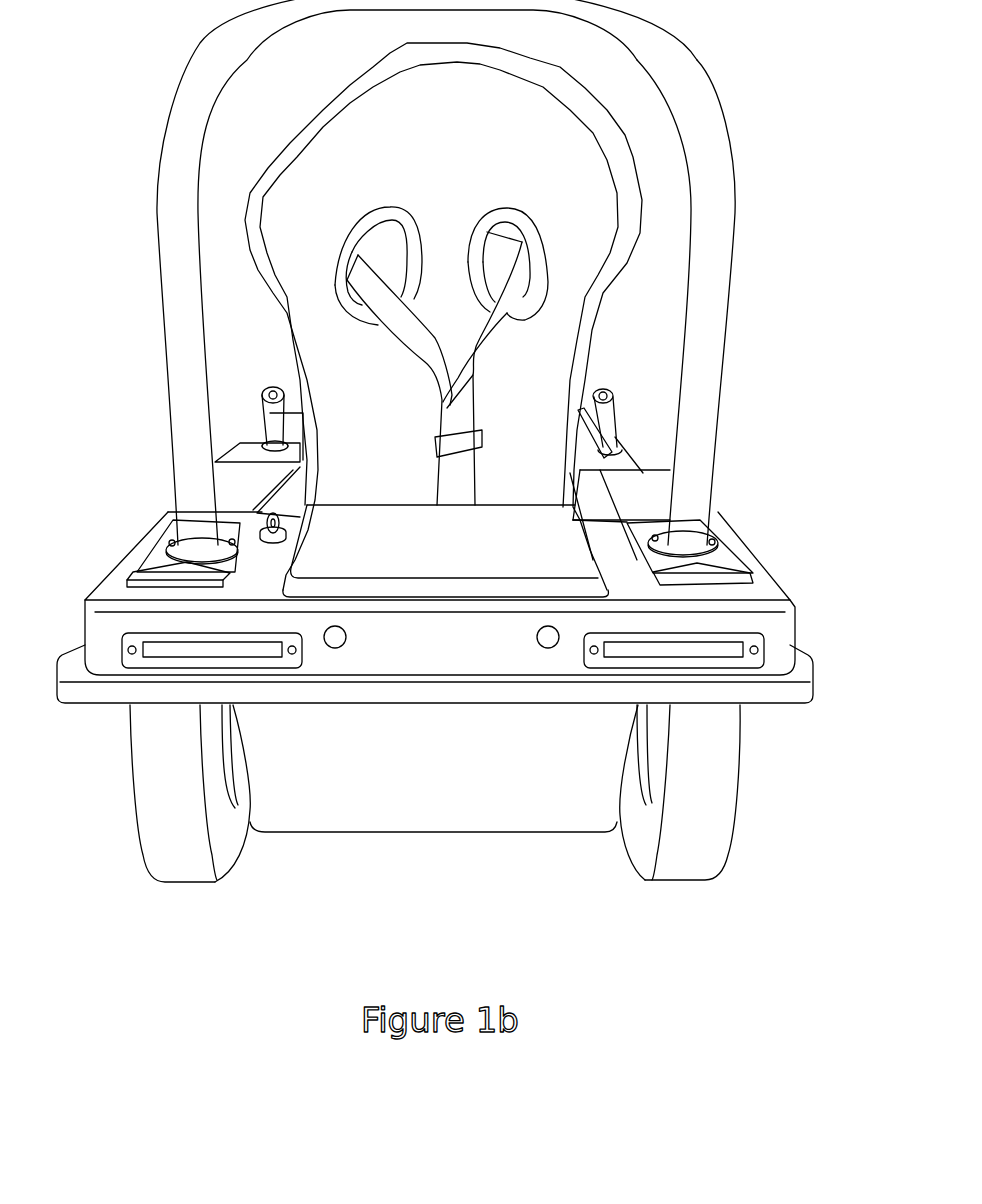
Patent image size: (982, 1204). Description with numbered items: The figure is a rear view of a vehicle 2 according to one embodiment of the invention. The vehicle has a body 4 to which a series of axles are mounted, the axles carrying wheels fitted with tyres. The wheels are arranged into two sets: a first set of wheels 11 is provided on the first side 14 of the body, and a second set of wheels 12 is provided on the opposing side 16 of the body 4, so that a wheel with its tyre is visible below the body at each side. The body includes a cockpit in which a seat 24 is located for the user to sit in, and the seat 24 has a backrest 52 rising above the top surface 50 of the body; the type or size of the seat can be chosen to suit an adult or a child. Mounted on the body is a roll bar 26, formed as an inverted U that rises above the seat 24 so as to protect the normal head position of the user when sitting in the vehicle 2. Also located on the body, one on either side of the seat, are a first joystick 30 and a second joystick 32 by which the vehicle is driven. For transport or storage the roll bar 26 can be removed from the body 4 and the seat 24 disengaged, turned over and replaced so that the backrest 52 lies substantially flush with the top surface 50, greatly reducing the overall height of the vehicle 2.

The vehicle 2 is at (237, 427).
The body 4 is at (740, 540).
The first set of wheels 11 is at (235, 853).
The second set of wheels 12 is at (698, 860).
The first side 14 is at (168, 508).
The opposing side 16 is at (640, 473).
The seat 24 is at (567, 310).
The roll bar 26 is at (700, 367).
The first joystick 30 is at (273, 385).
The second joystick 32 is at (617, 395).
The top surface 50 is at (700, 540).
The backrest 52 is at (550, 367).